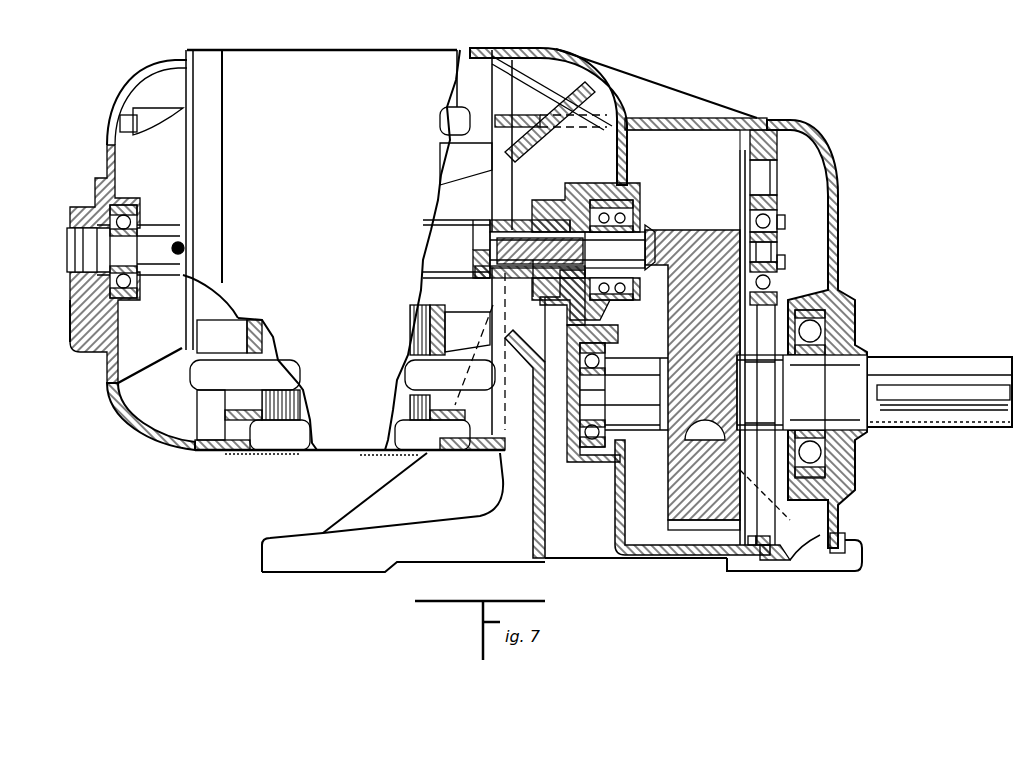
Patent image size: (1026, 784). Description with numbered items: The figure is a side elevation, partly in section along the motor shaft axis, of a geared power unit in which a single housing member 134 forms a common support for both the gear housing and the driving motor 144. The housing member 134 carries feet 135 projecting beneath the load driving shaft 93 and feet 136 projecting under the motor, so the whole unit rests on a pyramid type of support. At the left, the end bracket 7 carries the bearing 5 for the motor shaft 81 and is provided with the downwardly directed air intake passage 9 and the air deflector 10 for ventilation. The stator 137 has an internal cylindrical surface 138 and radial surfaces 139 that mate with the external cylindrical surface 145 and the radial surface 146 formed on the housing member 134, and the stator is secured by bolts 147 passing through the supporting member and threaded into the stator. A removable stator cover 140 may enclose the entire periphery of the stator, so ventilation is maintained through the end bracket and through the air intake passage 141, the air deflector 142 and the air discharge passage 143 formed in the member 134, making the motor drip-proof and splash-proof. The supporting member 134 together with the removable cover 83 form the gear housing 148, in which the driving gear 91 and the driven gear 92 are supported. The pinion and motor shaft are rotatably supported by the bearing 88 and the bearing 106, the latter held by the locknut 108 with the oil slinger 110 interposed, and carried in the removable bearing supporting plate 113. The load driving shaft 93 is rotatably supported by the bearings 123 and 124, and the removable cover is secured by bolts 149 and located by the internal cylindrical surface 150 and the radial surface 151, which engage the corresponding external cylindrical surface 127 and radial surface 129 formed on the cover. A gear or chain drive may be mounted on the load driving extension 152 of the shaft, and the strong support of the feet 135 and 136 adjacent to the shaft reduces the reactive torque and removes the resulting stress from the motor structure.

The bearing 5 is at (110, 305).
The end bracket 7 is at (112, 94).
The air intake passage 9 is at (95, 350).
The air deflector 10 is at (163, 360).
The motor shaft 81 is at (440, 240).
The removable cover 83 is at (836, 196).
The bearing 88 is at (632, 216).
The driving gear 91 is at (680, 230).
The driven gear 92 is at (672, 490).
The load driving shaft 93 is at (860, 366).
The bearing 106 is at (770, 222).
The locknut 108 is at (770, 264).
The oil slinger 110 is at (740, 184).
The bearing supporting plate 113 is at (764, 184).
The bearing 123 is at (586, 458).
The bearing 124 is at (857, 456).
The external cylindrical surface 127 is at (786, 516).
The radial surface 129 is at (772, 562).
The housing member 134 is at (520, 50).
The feet 135 is at (862, 568).
The feet 136 is at (262, 574).
The stator 137 is at (234, 452).
The internal cylindrical surface 138 is at (492, 55).
The radial surfaces 139 is at (470, 58).
The removable stator cover 140 is at (302, 452).
The air intake passage 141 is at (600, 560).
The air deflector 142 is at (548, 130).
The air discharge passage 143 is at (515, 512).
The driving motor 144 is at (330, 48).
The external cylindrical surface 145 is at (500, 62).
The radial surface 146 is at (500, 74).
The bolts 147 is at (628, 118).
The gear housing 148 is at (686, 176).
The bolts 149 is at (848, 540).
The internal cylindrical surface 150 is at (748, 540).
The radial surface 151 is at (752, 562).
The load driving extension 152 is at (990, 356).